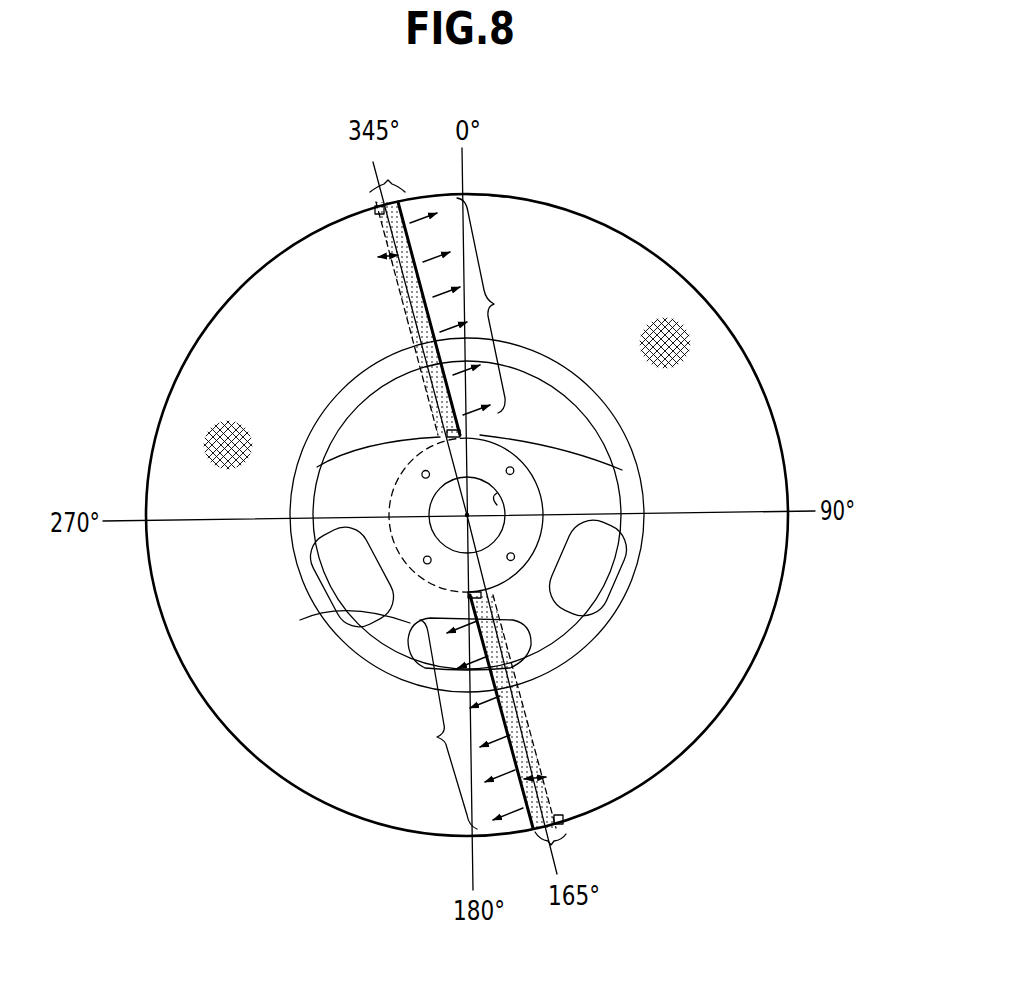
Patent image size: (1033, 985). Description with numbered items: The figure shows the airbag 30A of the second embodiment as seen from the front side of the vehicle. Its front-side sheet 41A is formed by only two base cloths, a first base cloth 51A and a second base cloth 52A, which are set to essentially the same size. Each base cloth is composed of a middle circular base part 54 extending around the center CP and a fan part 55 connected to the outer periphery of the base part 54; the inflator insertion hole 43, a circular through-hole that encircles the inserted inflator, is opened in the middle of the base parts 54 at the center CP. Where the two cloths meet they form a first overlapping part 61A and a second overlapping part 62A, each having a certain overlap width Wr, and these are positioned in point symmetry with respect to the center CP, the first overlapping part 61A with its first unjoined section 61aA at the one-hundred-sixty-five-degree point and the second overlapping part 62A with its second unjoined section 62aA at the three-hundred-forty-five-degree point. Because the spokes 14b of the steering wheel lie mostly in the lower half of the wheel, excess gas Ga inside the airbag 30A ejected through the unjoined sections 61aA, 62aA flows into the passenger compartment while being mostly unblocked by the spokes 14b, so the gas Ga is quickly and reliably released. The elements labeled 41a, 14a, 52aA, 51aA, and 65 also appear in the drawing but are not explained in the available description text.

The airbag 30A is at (473, 428).
The front-side sheet 41A is at (597, 214).
The outer peripheral surface of rotor yoke 41a is at (512, 197).
The first base cloth 51A is at (654, 288).
The fan part 55 is at (696, 336).
The second base cloth 52A is at (196, 577).
The inflator insertion hole 43 is at (514, 459).
The base part 54 is at (526, 480).
The center CP is at (445, 513).
The spokes 14b is at (565, 548).
The window opening 14a is at (568, 566).
The second overlapping part 62A is at (461, 499).
The first overlapping part 61A is at (512, 736).
The slit edge 52aA is at (417, 277).
The slit edge 51aA is at (398, 322).
The overlap width Wr is at (376, 258).
The gas Ga is at (428, 278).
The corner portion 65 is at (377, 212).
The second unjoined section 62aA is at (508, 305).
The first unjoined section 61aA is at (426, 724).